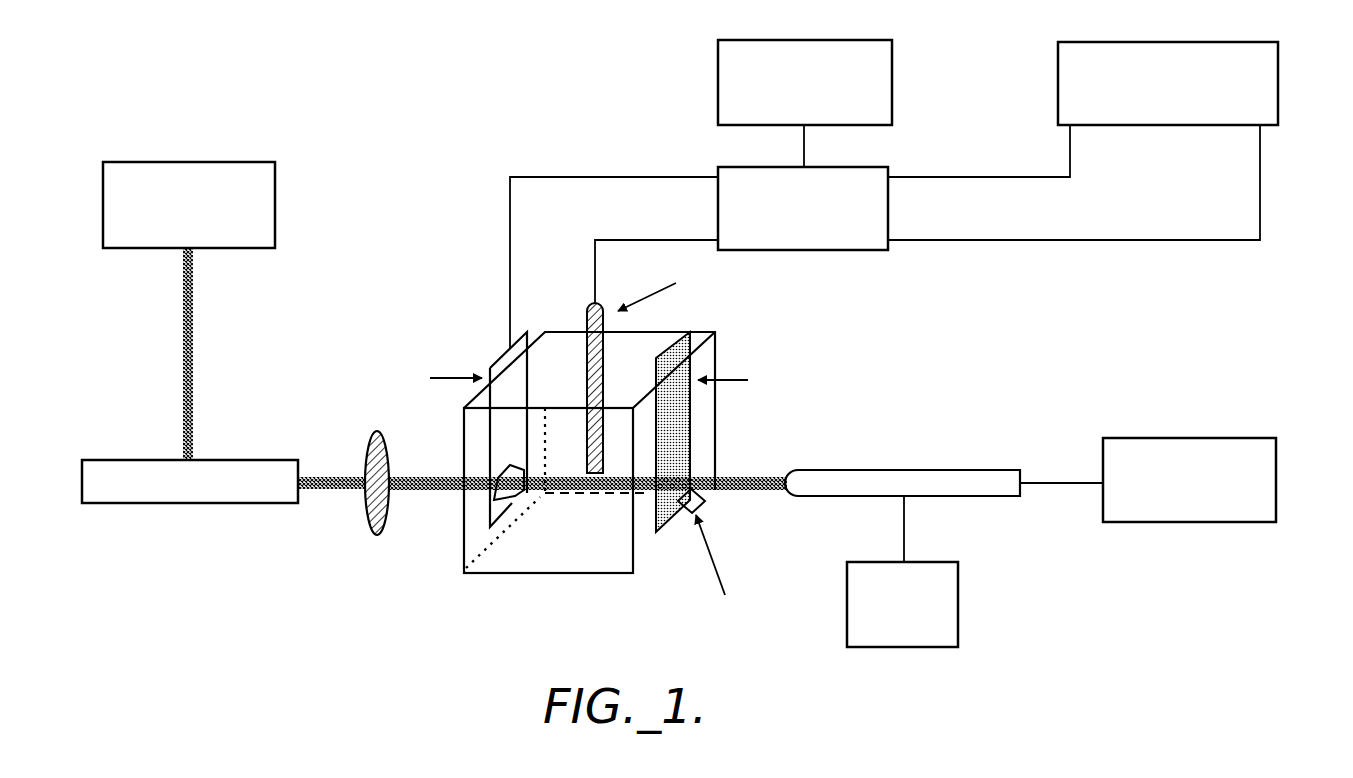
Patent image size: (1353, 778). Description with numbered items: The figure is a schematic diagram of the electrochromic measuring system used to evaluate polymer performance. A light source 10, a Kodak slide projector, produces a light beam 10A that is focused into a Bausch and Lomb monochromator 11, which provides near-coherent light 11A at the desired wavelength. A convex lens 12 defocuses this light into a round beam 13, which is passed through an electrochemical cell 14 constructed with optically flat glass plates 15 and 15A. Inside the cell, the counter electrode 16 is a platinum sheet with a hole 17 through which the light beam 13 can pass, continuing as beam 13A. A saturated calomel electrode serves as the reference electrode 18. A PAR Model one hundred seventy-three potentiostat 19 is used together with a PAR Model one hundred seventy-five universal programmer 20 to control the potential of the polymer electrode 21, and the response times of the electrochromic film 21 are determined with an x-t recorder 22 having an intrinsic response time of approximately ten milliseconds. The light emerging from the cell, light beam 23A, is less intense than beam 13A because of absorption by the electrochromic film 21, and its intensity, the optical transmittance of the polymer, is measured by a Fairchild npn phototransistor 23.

The light source 10 is at (262, 162).
The light beam 10A is at (194, 336).
The monochromator 11 is at (258, 460).
The near-coherent light 11A is at (318, 452).
The convex lens 12 is at (400, 424).
The round beam 13 is at (413, 490).
The light beam 13A is at (617, 493).
The electrochemical cell 14 is at (633, 582).
The optically flat glass plate 15 is at (643, 540).
The optically flat glass plate 15A is at (465, 557).
The counter electrode 16 is at (496, 362).
The hole 17 is at (518, 494).
The reference electrode 18 is at (590, 310).
The potentiostat 19 is at (878, 167).
The universal programmer 20 is at (872, 40).
The polymer electrode 21 is at (703, 503).
The x-t recorder 22 is at (1262, 42).
The phototransistor 23 is at (950, 470).
The light beam 23A is at (741, 477).